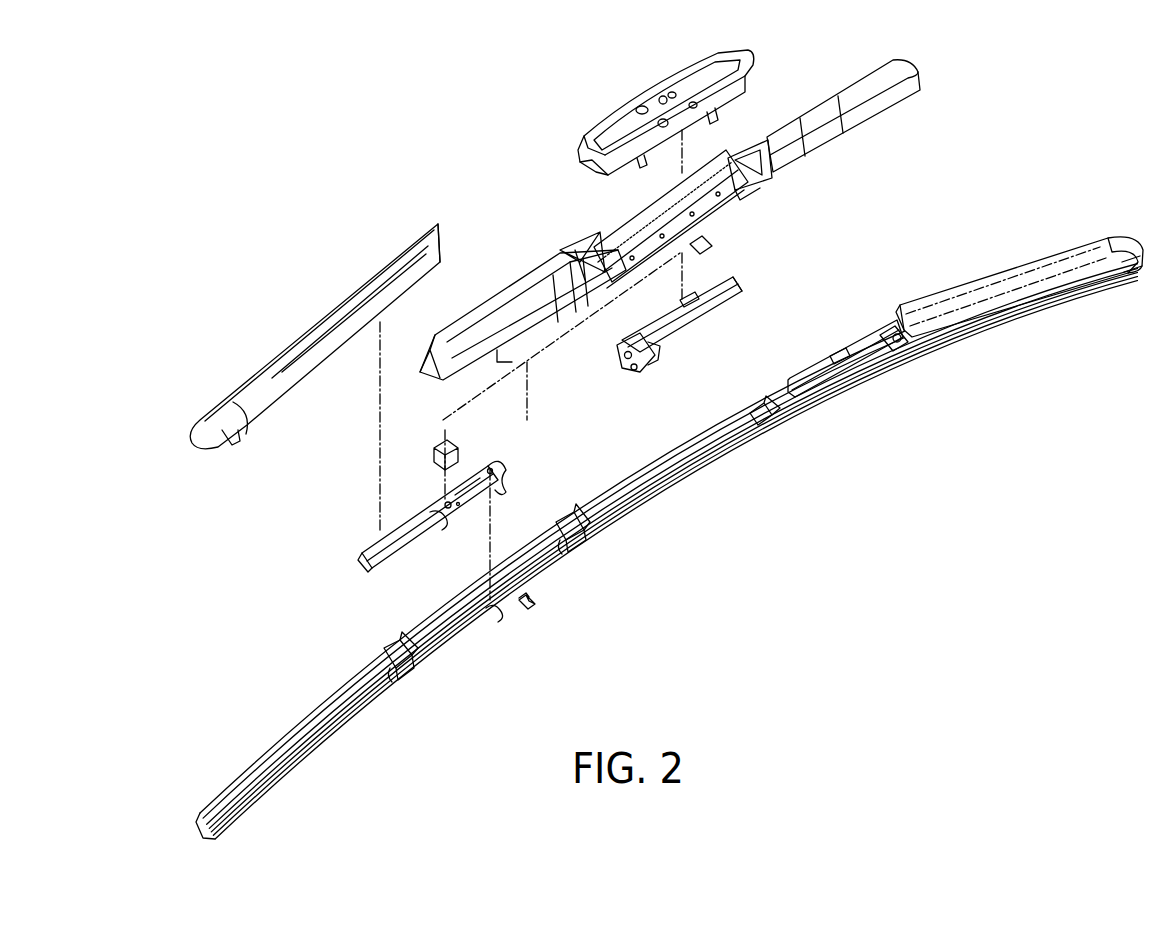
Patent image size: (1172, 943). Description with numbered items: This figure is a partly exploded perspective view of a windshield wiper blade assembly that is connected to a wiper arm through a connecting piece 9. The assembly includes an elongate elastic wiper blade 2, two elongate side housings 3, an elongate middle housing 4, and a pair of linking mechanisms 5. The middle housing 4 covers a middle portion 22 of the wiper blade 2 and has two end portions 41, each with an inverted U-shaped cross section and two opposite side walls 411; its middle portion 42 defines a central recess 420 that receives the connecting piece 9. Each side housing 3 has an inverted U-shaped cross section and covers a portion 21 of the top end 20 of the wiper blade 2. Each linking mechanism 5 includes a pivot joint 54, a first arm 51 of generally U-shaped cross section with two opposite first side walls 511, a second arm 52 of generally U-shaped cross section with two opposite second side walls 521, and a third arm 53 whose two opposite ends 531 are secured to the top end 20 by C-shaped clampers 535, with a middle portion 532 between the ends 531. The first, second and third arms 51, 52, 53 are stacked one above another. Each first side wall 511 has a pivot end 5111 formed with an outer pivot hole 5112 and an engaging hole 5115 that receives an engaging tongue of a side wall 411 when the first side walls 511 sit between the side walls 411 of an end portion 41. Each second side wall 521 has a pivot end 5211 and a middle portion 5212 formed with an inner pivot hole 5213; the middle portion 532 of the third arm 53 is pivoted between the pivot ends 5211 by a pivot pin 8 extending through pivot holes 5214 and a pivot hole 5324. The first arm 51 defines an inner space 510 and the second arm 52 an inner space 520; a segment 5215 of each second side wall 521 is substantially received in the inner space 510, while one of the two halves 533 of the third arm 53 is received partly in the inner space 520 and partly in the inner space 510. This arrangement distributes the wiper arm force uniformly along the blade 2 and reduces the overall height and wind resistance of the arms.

The wiper blade 2 is at (203, 794).
The top end 20 is at (305, 715).
The portion 21 is at (336, 722).
The middle portion 22 is at (698, 455).
The side housing 3 is at (963, 292).
The middle housing 4 is at (589, 204).
The end portion 41 is at (815, 107).
The side wall 411 is at (861, 120).
The middle portion 42 is at (738, 192).
The central recess 420 is at (650, 232).
The linking mechanism 5 is at (826, 344).
The first arm 51 is at (749, 278).
The inner space 510 is at (704, 283).
The first side wall 511 is at (731, 301).
The pivot end 5111 is at (637, 372).
The outer pivot hole 5112 is at (630, 365).
The engaging hole 5115 is at (659, 346).
The second arm 52 is at (371, 537).
The inner space 520 is at (460, 508).
The second side wall 521 is at (387, 566).
The pivot end 5211 is at (506, 492).
The middle portion 5212 is at (446, 518).
The inner pivot hole 5213 is at (441, 508).
The pivot hole 5214 is at (490, 470).
The segment 5215 is at (474, 490).
The third arm 53 is at (551, 519).
The end 531 is at (586, 515).
The middle portion 532 is at (492, 613).
The half 533 is at (580, 548).
The C-shaped clamper 535 is at (600, 528).
The pivot hole 5324 is at (527, 601).
The pivot joint 54 is at (436, 444).
The pivot pin 8 is at (530, 614).
The connecting piece 9 is at (596, 102).